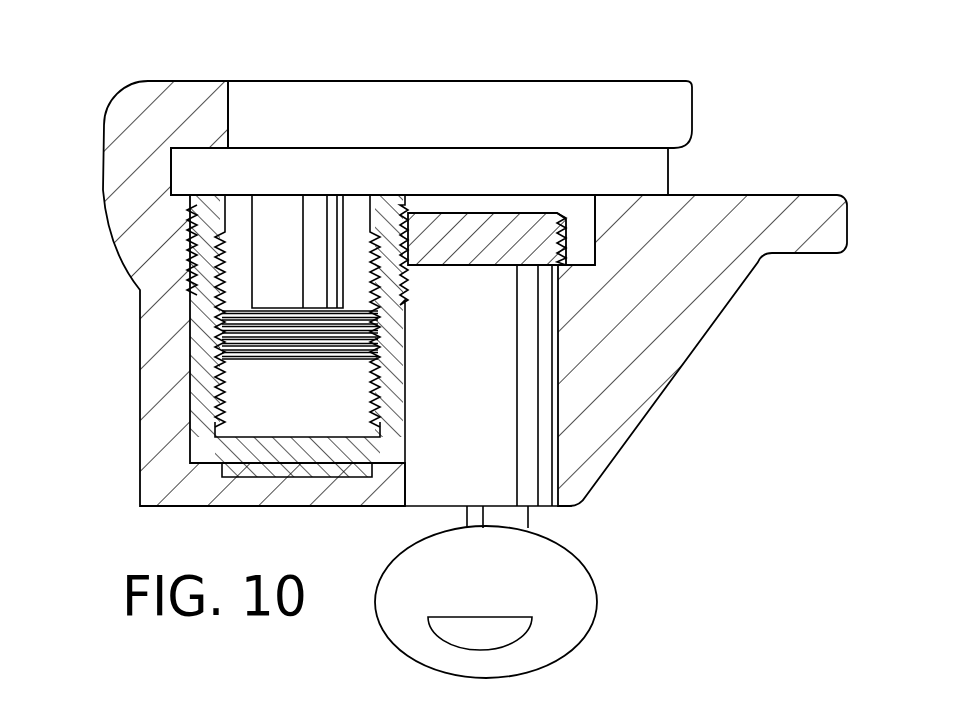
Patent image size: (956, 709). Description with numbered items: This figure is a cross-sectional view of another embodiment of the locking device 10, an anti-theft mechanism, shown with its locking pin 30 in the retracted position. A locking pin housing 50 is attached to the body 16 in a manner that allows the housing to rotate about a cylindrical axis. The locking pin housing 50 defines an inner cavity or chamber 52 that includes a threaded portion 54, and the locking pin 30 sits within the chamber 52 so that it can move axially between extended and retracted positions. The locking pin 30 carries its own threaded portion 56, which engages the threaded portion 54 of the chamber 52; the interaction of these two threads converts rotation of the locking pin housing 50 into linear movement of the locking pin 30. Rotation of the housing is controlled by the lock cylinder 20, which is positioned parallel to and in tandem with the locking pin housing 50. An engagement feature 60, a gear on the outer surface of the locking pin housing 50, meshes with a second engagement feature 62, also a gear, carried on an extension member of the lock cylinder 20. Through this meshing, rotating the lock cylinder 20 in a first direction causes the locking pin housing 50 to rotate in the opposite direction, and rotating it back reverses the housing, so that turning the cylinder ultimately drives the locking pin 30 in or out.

The locking device 10 is at (131, 73).
The body 16 is at (797, 210).
The lock cylinder 20 is at (528, 463).
The locking pin 30 is at (284, 204).
The locking pin housing 50 is at (197, 383).
The chamber 52 is at (358, 213).
The threaded portion 54 is at (217, 288).
The threaded portion 56 is at (330, 358).
The engagement feature 60 is at (190, 250).
The engagement feature 62 is at (568, 224).